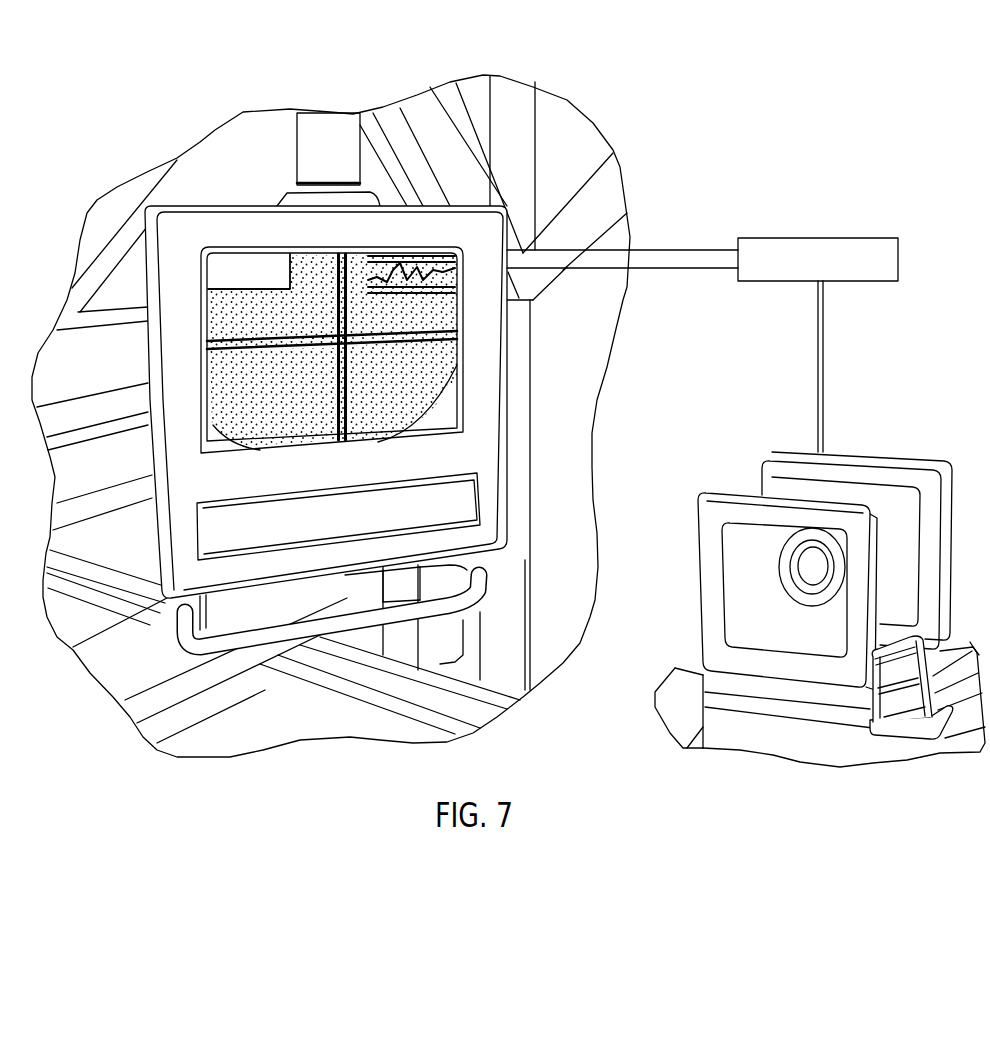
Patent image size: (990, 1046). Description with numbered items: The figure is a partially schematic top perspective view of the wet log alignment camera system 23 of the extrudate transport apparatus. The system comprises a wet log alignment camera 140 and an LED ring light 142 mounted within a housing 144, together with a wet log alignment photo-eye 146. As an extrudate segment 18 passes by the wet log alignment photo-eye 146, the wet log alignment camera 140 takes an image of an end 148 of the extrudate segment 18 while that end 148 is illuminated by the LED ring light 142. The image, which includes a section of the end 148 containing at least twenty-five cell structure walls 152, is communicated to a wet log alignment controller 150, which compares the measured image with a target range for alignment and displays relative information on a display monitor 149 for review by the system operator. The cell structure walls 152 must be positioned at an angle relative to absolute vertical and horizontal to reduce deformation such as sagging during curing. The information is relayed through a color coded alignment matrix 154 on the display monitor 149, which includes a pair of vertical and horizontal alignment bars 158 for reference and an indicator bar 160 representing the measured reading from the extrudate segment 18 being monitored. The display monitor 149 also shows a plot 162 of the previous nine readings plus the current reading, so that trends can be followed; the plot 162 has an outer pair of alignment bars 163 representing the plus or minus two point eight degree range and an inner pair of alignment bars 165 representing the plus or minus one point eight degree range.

The wet log alignment camera system 23 is at (770, 90).
The extrudate segment 18 is at (437, 420).
The wet log alignment camera 140 is at (811, 572).
The LED ring light 142 is at (785, 563).
The housing 144 is at (871, 490).
The wet log alignment photo-eye 146 is at (892, 675).
The end 148 is at (457, 283).
The display monitor 149 is at (502, 494).
The wet log alignment controller 150 is at (898, 250).
The cell structure walls 152 is at (441, 302).
The color coded alignment matrix 154 is at (423, 433).
The vertical and horizontal alignment bars 158 is at (378, 460).
The indicator bar 160 is at (376, 453).
The plot 162 is at (457, 265).
The outer pair of alignment bars 163 is at (405, 160).
The inner pair of alignment bars 165 is at (413, 170).